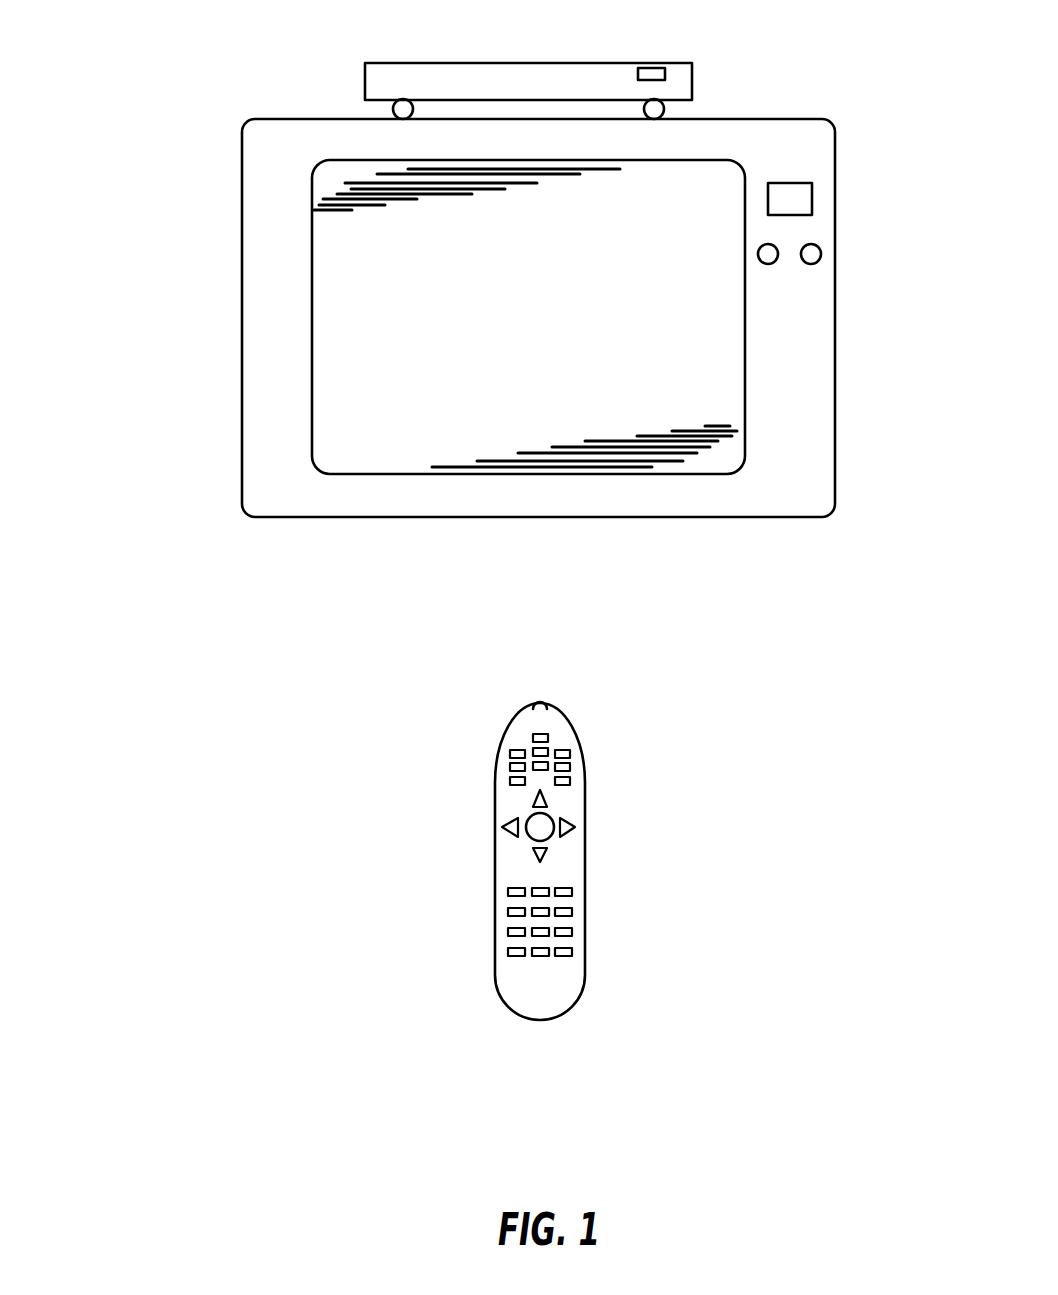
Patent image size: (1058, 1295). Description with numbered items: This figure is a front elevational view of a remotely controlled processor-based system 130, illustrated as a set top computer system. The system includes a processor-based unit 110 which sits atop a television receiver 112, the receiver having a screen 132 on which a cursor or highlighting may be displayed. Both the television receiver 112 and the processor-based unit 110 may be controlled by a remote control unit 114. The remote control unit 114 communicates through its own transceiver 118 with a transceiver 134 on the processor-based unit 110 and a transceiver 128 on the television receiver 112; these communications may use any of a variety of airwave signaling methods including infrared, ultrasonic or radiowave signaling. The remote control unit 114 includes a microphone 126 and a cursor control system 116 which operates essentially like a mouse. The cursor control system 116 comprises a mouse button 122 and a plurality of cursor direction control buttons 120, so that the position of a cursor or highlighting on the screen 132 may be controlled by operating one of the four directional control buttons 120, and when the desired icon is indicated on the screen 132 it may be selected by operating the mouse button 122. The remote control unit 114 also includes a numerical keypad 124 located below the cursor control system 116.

The processor-based unit 110 is at (528, 66).
The television receiver 112 is at (585, 318).
The remote control unit 114 is at (618, 818).
The cursor control system 116 is at (493, 804).
The transceiver 118 is at (583, 680).
The cursor direction control buttons 120 is at (600, 863).
The mouse button 122 is at (464, 858).
The numerical keypad 124 is at (604, 940).
The microphone 126 is at (585, 740).
The transceiver 128 is at (842, 207).
The processor-based system 130 is at (178, 199).
The screen 132 is at (620, 317).
The transceiver 134 is at (698, 52).